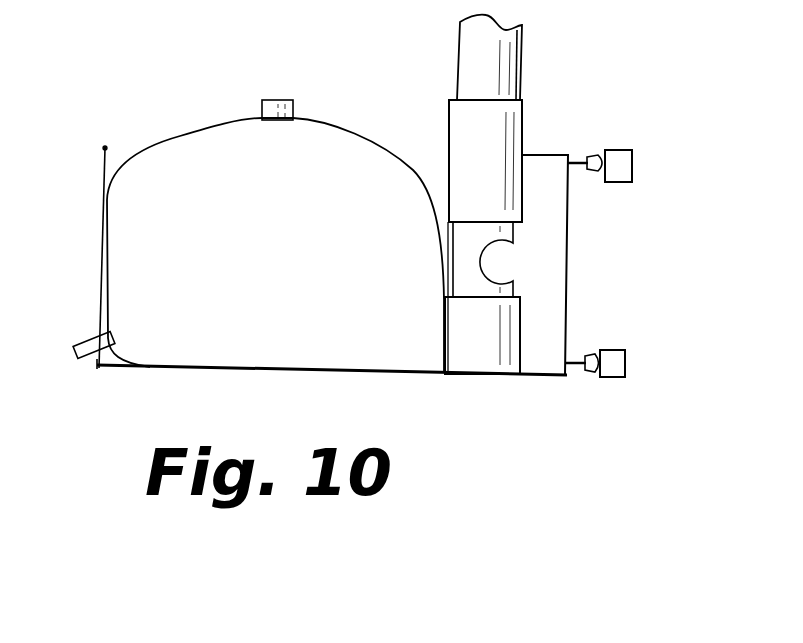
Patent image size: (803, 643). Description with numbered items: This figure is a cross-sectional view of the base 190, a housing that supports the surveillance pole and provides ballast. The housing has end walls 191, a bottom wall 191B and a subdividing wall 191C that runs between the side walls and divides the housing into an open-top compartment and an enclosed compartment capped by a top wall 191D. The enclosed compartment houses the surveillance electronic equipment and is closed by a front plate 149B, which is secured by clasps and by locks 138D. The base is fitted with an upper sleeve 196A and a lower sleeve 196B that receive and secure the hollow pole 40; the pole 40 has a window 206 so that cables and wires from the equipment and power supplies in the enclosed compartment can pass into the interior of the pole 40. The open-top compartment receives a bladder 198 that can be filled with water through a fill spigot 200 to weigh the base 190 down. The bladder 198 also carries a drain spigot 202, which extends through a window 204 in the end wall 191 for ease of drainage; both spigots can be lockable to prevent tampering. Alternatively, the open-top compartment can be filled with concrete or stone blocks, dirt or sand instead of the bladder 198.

The base 190 is at (140, 107).
The end wall 191 is at (102, 183).
The bottom wall 191B is at (285, 373).
The subdividing wall 191C is at (447, 162).
The top wall 191D is at (568, 153).
The bladder 198 is at (298, 275).
The fill spigot 200 is at (262, 107).
The drain spigot 202 is at (86, 337).
The window 204 is at (97, 361).
The pole 40 is at (524, 55).
The sleeve 196A is at (527, 118).
The sleeve 196B is at (482, 373).
The window 206 is at (487, 258).
The front plate 149B is at (570, 217).
The lock 138D is at (626, 370).